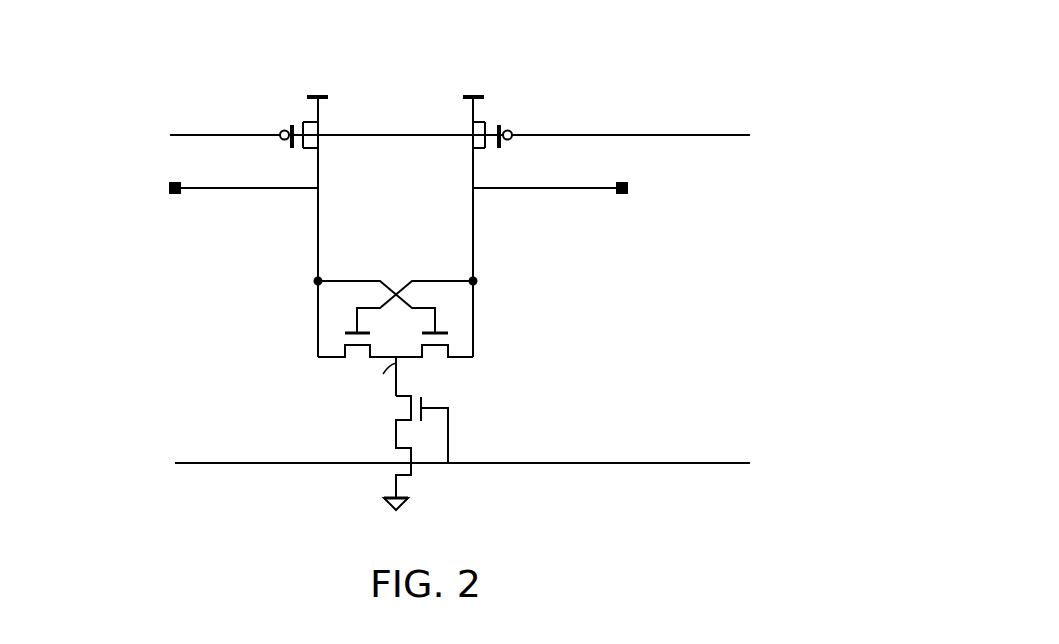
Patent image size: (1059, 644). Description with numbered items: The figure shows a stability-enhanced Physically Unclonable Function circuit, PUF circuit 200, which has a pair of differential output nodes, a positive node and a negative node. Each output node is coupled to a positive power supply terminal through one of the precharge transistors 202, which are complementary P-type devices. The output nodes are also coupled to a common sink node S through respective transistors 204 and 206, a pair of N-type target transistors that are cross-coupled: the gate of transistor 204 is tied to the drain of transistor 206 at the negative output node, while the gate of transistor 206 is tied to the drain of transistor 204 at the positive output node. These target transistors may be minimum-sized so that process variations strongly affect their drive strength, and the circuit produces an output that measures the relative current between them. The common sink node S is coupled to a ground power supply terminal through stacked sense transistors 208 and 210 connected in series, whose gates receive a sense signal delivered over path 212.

The PUF circuit 200 is at (530, 40).
The precharge transistors 202 is at (280, 130).
The transistor 204 is at (353, 359).
The transistor 206 is at (440, 359).
The sense transistor 208 is at (400, 411).
The sense transistor 210 is at (421, 448).
The path 212 is at (702, 464).